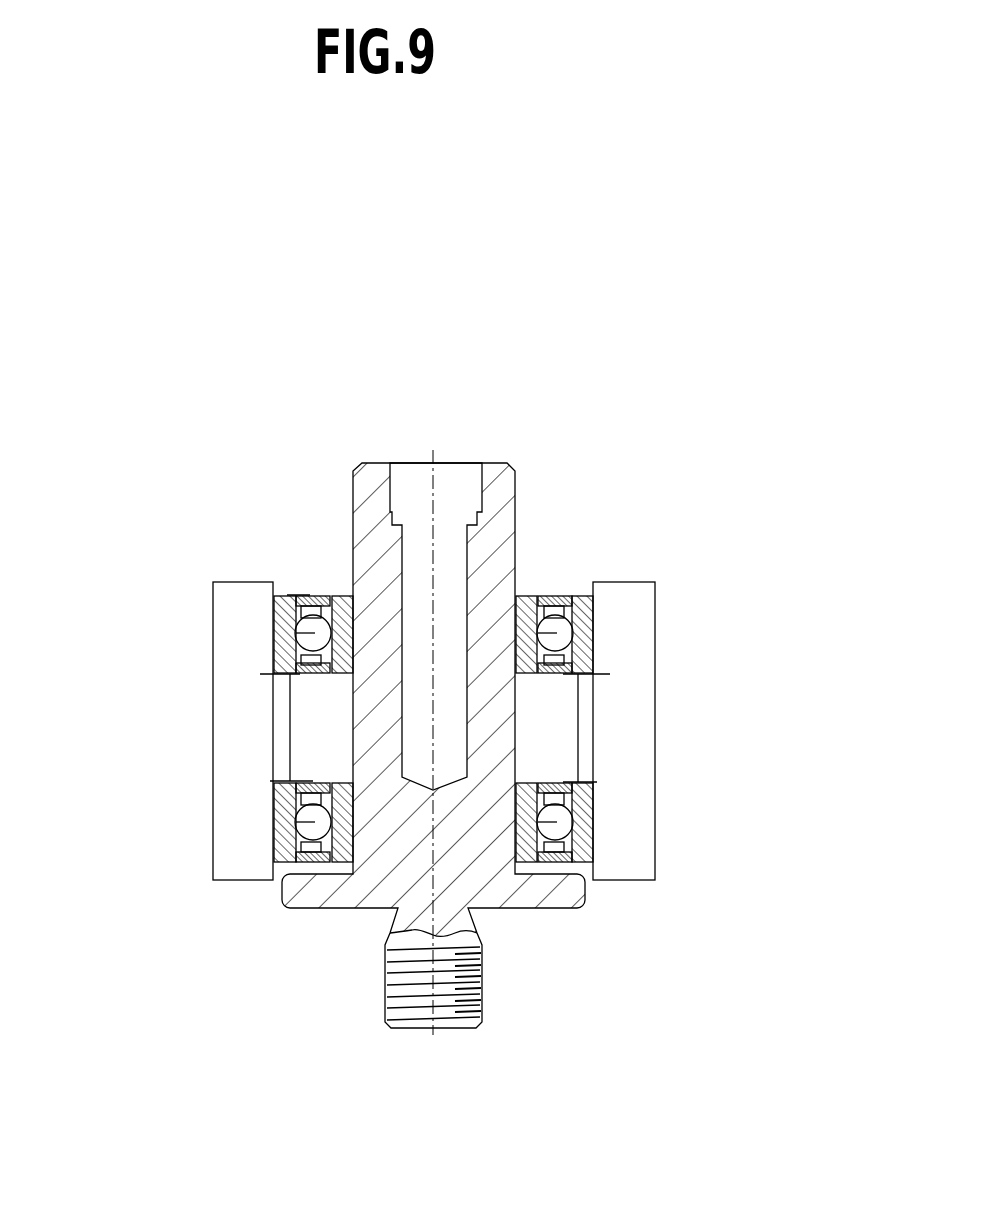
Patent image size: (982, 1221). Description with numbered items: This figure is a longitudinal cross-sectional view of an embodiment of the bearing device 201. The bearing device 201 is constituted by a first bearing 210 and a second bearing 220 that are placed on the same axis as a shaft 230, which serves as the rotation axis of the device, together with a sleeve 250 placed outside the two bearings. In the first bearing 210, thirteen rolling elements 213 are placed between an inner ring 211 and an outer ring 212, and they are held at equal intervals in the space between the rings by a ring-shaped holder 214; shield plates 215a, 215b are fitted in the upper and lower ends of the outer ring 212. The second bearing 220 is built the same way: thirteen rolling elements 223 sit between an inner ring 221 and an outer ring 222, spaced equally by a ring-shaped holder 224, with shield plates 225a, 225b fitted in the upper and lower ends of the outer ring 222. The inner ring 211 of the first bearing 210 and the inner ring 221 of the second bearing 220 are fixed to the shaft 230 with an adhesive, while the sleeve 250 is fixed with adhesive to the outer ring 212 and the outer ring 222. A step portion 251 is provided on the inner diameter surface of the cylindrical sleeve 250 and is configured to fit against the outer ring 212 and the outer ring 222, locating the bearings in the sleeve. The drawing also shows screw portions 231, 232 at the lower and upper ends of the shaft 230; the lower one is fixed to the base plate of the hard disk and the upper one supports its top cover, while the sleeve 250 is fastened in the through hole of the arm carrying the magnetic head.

The bearing device 201 is at (210, 434).
The first bearing 210 is at (474, 609).
The inner ring 211 is at (525, 596).
The outer ring 212 is at (587, 634).
The rolling elements 213 is at (556, 640).
The holder 214 is at (311, 597).
The shield plate 215a is at (563, 597).
The shield plate 215b is at (545, 670).
The second bearing 220 is at (448, 887).
The inner ring 221 is at (529, 852).
The outer ring 222 is at (586, 809).
The rolling elements 223 is at (562, 831).
The holder 224 is at (311, 860).
The shield plate 225a is at (555, 784).
The shield plate 225b is at (570, 856).
The shaft 230 is at (500, 506).
The threaded portion of shaft 231 is at (443, 996).
The bolt 232 is at (414, 480).
The sleeve 250 is at (228, 692).
The step portion 251 is at (280, 738).